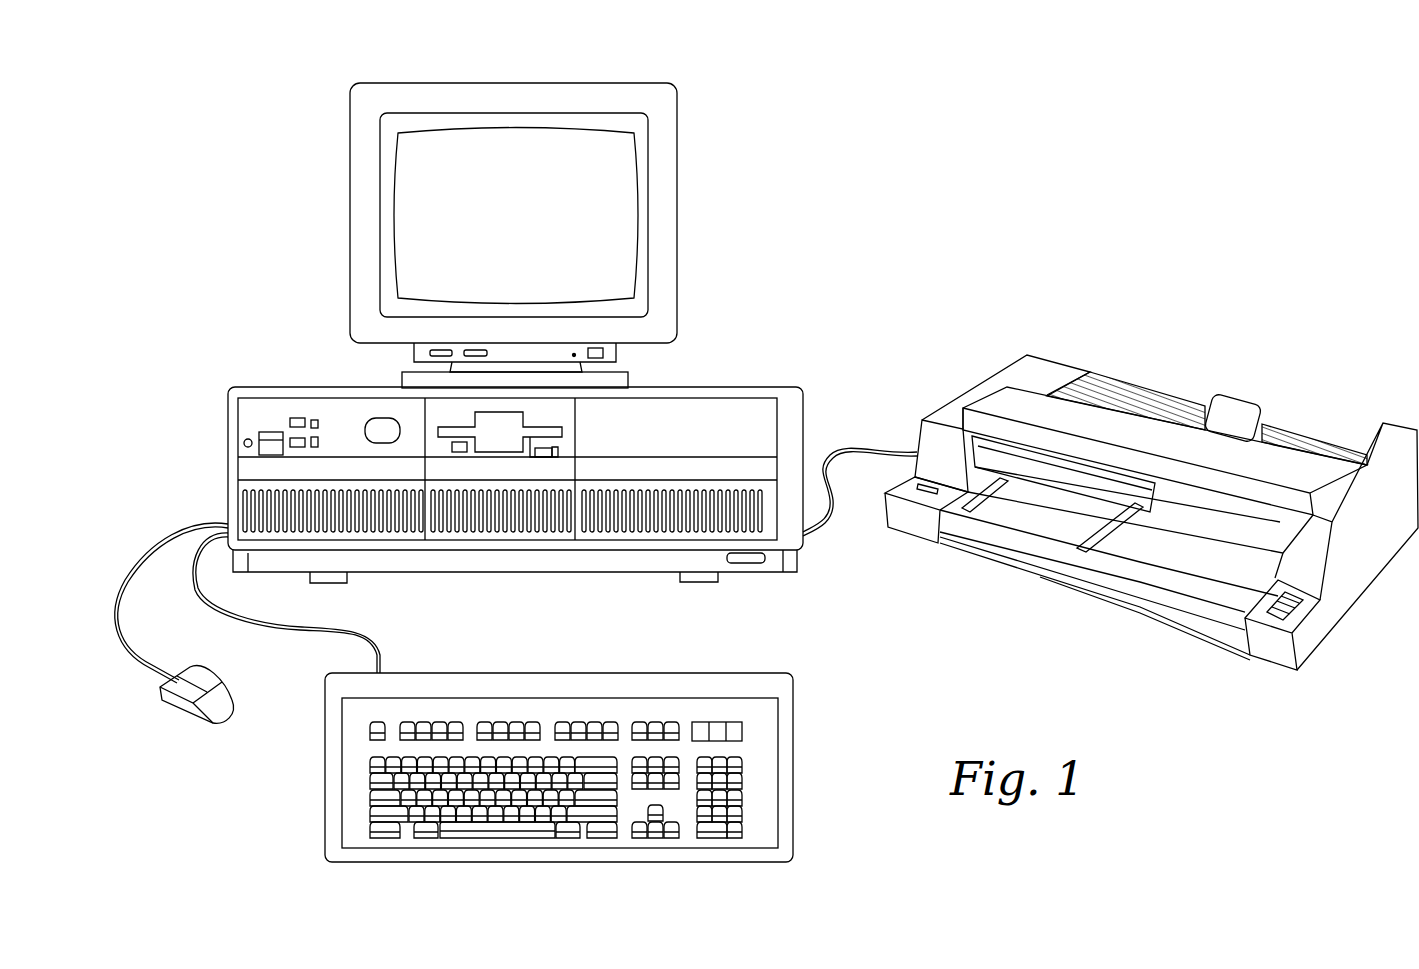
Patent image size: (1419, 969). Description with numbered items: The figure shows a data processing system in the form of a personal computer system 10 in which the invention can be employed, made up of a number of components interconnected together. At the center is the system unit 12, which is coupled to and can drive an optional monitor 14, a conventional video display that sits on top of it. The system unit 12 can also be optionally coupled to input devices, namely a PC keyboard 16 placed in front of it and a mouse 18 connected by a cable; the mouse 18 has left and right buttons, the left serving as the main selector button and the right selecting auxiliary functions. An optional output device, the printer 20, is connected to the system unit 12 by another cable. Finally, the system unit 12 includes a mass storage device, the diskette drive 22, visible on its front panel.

The personal computer system 10 is at (874, 131).
The system unit 12 is at (519, 462).
The monitor 14 is at (692, 233).
The PC keyboard 16 is at (641, 665).
The mouse 18 is at (188, 710).
The printer 20 is at (941, 381).
The diskette drive 22 is at (497, 443).